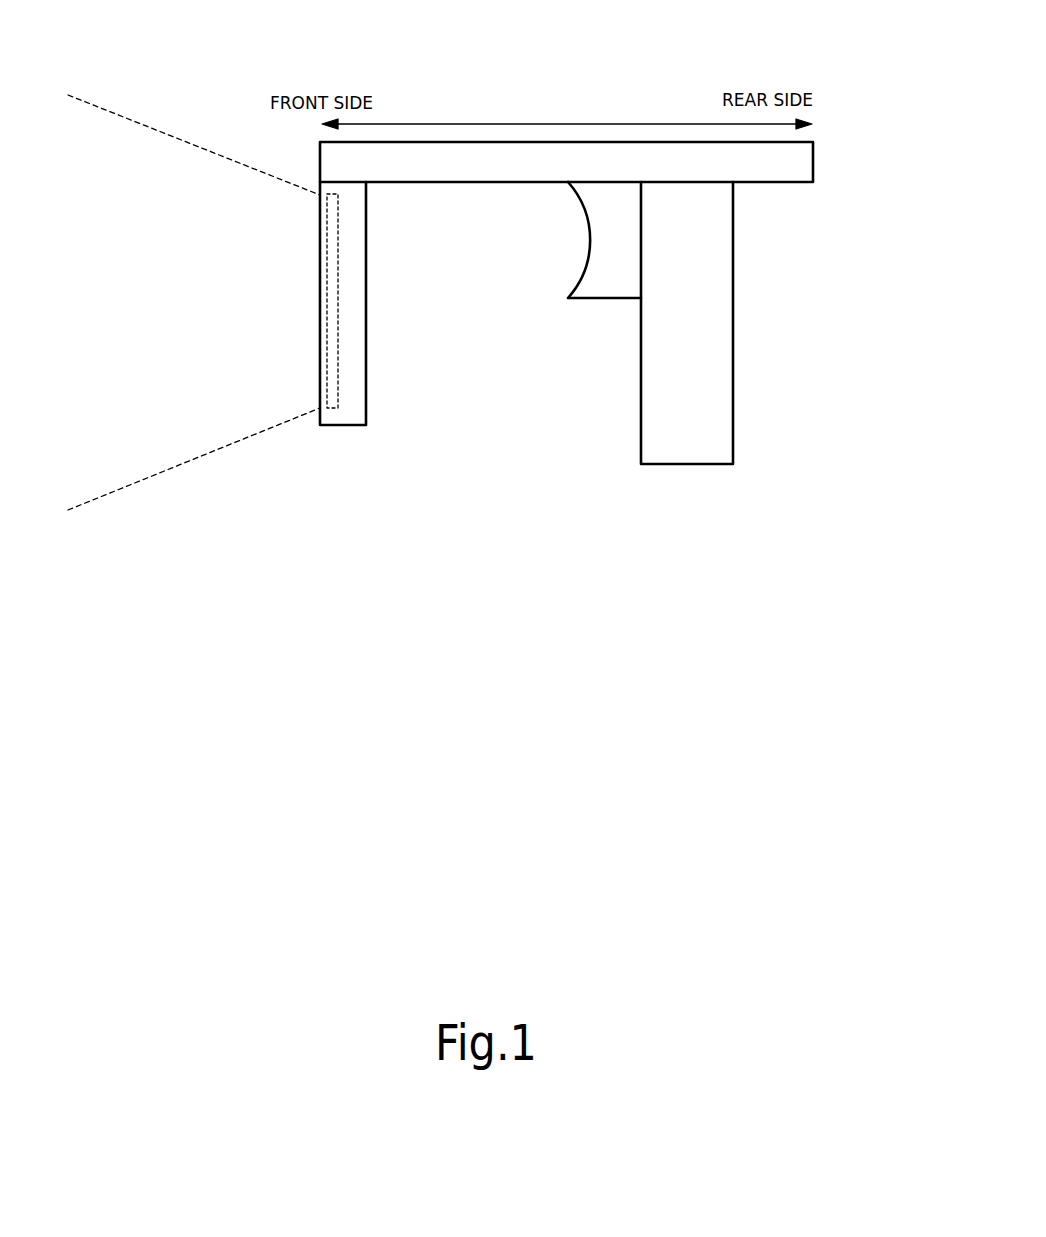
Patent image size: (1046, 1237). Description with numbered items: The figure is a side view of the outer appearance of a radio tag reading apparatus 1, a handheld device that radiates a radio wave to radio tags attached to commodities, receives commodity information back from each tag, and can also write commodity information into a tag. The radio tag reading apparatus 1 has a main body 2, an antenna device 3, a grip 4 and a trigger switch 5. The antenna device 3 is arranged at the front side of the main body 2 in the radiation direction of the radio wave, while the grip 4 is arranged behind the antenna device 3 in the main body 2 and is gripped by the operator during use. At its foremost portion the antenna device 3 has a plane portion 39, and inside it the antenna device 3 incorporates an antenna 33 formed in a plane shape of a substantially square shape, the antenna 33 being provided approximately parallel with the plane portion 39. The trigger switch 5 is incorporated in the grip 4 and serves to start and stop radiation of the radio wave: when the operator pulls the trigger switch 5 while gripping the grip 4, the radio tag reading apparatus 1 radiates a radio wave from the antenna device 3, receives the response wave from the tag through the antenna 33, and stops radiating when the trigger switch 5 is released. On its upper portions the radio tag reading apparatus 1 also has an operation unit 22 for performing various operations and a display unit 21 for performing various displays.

The radio tag reading apparatus 1 is at (683, 65).
The main body 2 is at (808, 154).
The antenna device 3 is at (365, 347).
The grip 4 is at (728, 342).
The trigger switch 5 is at (582, 268).
The display unit 21 is at (374, 140).
The operation unit 22 is at (441, 140).
The antenna 33 is at (320, 270).
The plane portion 39 is at (320, 326).